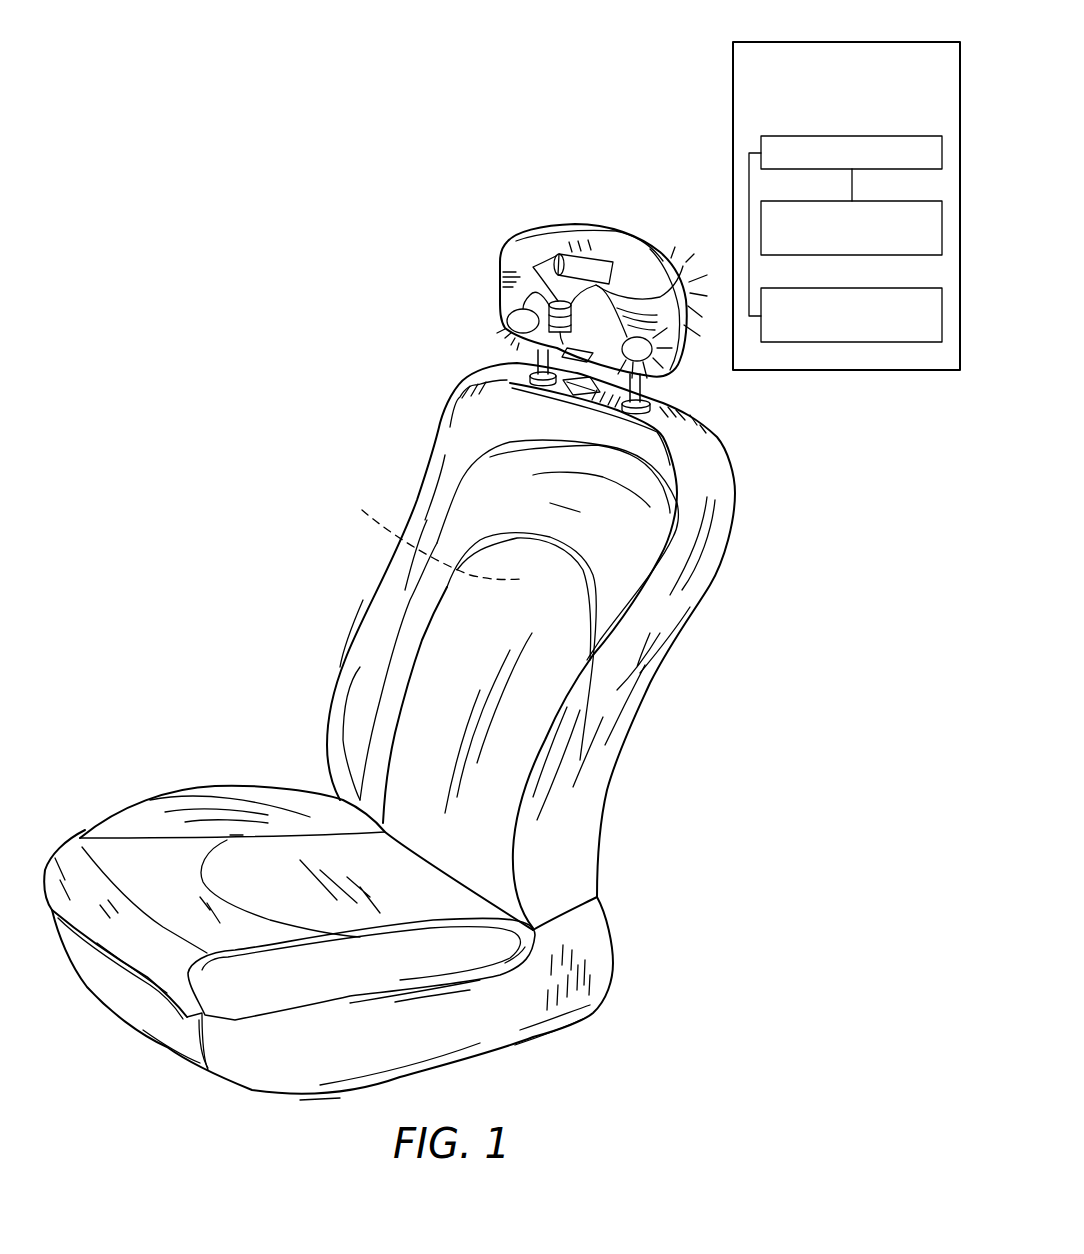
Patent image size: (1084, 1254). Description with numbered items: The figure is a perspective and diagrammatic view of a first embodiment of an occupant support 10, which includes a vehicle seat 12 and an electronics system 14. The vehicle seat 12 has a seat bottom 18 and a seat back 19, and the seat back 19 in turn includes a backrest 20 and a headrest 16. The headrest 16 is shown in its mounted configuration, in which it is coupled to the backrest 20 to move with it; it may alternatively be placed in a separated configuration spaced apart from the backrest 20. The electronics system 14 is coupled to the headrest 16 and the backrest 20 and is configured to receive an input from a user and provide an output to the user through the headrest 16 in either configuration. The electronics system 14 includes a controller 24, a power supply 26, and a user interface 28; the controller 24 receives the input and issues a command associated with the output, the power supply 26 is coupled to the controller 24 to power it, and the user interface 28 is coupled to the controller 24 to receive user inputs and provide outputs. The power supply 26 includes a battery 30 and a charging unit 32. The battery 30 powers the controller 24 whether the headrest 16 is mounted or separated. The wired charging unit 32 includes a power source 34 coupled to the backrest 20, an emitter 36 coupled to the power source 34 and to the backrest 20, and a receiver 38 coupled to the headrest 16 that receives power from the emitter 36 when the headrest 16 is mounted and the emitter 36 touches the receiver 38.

The occupant support 10 is at (713, 28).
The vehicle seat 12 is at (211, 580).
The electronics system 14 is at (771, 42).
The headrest 16 is at (492, 237).
The seat bottom 18 is at (220, 767).
The seat back 19 is at (378, 194).
The backrest 20 is at (362, 578).
The controller 24 is at (894, 136).
The power supply 26 is at (894, 201).
The user interface 28 is at (894, 288).
The battery 30 is at (596, 286).
The charging unit 32 is at (359, 465).
The power source 34 is at (434, 531).
The emitter 36 is at (503, 355).
The receiver 38 is at (517, 360).